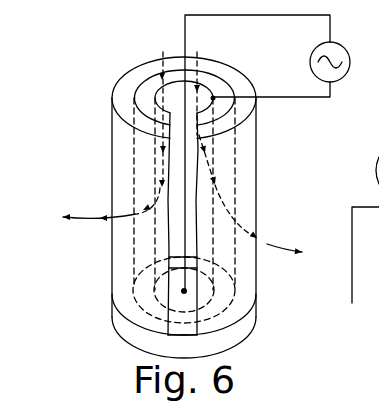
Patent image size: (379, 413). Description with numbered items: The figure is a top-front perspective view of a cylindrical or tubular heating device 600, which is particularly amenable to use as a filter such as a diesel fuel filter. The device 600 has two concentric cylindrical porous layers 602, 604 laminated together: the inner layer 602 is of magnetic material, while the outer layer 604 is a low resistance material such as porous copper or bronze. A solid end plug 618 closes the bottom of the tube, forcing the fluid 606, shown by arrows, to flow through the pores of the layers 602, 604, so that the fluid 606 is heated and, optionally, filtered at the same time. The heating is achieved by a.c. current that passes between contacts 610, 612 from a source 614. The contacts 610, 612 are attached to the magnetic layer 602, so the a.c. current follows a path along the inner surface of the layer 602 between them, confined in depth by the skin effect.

The cylindrical or tubular structure device 600 is at (91, 101).
The magnetic porous layer 602 is at (207, 78).
The low resistance porous layer 604 is at (240, 78).
The fluid 606 is at (163, 44).
The contact 610 is at (213, 98).
The contact 612 is at (182, 290).
The source 614 is at (342, 46).
The solid end plug 618 is at (118, 320).